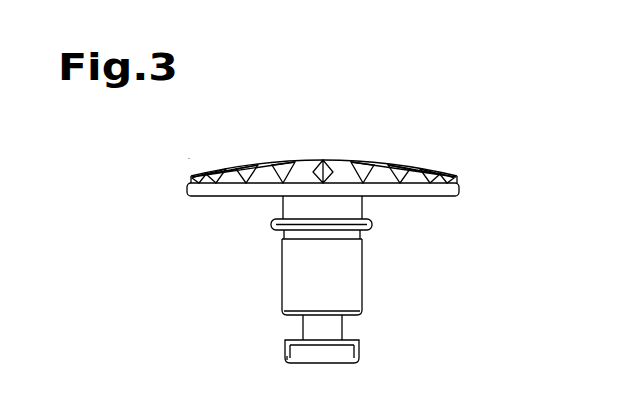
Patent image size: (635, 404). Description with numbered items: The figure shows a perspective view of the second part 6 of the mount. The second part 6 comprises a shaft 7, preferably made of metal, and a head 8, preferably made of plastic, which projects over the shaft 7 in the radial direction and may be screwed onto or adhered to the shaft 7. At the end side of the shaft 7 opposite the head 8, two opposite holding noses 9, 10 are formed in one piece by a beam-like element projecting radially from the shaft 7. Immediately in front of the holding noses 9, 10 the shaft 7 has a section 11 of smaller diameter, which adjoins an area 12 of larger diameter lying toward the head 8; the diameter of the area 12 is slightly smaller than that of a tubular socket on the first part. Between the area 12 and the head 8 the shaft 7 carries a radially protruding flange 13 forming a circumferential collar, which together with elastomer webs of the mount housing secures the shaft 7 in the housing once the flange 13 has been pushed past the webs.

The second part 6 is at (466, 133).
The shaft 7 is at (266, 268).
The head 8 is at (337, 162).
The holding nose 9 is at (358, 360).
The holding nose 10 is at (288, 347).
The section 11 is at (343, 328).
The area 12 is at (362, 274).
The flange 13 is at (372, 223).